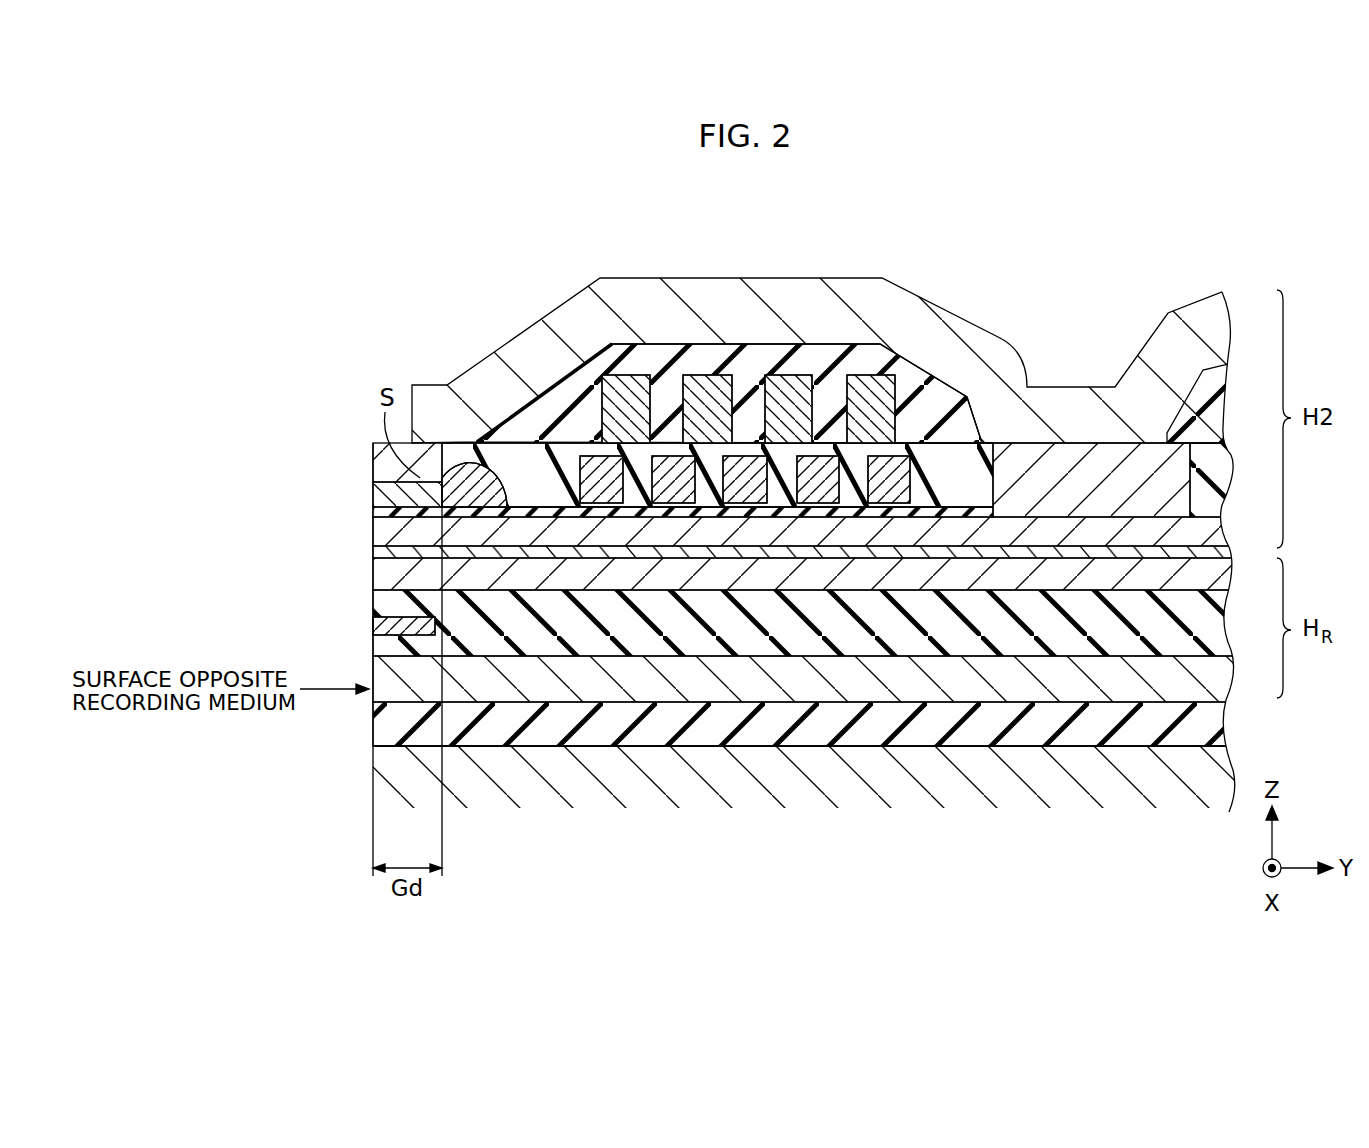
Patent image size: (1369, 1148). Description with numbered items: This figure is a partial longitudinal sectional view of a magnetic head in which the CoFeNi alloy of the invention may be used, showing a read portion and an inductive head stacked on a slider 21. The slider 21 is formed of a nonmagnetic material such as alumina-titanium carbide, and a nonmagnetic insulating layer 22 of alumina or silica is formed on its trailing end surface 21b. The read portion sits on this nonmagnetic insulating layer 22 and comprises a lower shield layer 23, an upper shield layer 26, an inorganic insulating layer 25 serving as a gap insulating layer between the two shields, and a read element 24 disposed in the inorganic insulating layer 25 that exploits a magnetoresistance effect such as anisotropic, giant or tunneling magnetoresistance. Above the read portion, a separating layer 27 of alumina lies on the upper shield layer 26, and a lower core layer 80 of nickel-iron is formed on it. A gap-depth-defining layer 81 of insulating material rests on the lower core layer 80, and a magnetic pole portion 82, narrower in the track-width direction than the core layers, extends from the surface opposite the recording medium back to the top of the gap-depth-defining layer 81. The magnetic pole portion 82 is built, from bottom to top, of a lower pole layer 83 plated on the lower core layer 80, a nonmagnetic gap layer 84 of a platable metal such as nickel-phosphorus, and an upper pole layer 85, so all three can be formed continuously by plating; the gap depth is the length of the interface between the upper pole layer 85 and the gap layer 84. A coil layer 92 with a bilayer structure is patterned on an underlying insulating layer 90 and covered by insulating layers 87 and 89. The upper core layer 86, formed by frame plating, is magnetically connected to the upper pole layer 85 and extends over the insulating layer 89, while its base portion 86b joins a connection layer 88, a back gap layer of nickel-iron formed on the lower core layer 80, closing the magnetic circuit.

The slider 21 is at (818, 790).
The trailing end surface 21b is at (698, 736).
The nonmagnetic insulating layer 22 is at (915, 732).
The lower shield layer 23 is at (1046, 690).
The read element 24 is at (382, 628).
The inorganic insulating layer 25 is at (643, 637).
The upper shield layer 26 is at (390, 573).
The separating layer 27 is at (390, 552).
The lower core layer 80 is at (390, 530).
The gap-depth-defining layer 81 is at (477, 500).
The magnetic pole portion 82 is at (611, 478).
The lower pole layer 83 is at (382, 512).
The nonmagnetic gap layer 84 is at (380, 488).
The upper pole layer 85 is at (382, 463).
The upper core layer 86 is at (695, 297).
The base portion 86b is at (1075, 422).
The insulating layer 87 is at (563, 490).
The connection layer 88 is at (1107, 487).
The insulating layer 89 is at (943, 393).
The underlying insulating layer 90 is at (543, 500).
The coil layer 92 is at (748, 358).